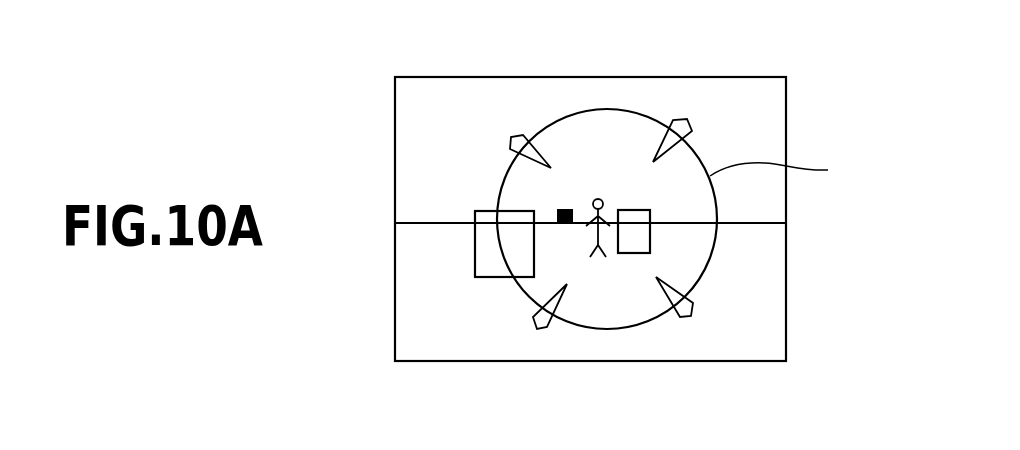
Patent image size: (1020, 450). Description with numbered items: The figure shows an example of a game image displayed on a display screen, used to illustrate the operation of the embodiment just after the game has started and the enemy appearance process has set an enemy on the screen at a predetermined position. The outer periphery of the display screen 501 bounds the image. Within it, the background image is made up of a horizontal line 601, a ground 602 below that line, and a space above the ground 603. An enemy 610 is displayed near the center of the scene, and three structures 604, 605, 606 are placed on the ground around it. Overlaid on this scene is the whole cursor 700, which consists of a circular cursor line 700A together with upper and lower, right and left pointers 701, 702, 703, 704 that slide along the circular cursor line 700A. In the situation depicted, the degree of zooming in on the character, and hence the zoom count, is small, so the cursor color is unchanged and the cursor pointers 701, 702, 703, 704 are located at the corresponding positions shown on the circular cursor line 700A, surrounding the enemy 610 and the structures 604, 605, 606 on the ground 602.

The outer periphery of display screen 501 is at (786, 350).
The horizontal line 601 is at (786, 223).
The ground 602 is at (775, 258).
The space above the ground 603 is at (775, 131).
The structure 604 is at (565, 208).
The structure 605 is at (650, 240).
The structure 606 is at (475, 254).
The enemy 610 is at (599, 199).
The whole cursor 700 is at (603, 329).
The circular cursor line 700A is at (807, 171).
The pointer 701 is at (513, 140).
The pointer 702 is at (683, 122).
The pointer 703 is at (535, 324).
The pointer 704 is at (686, 318).